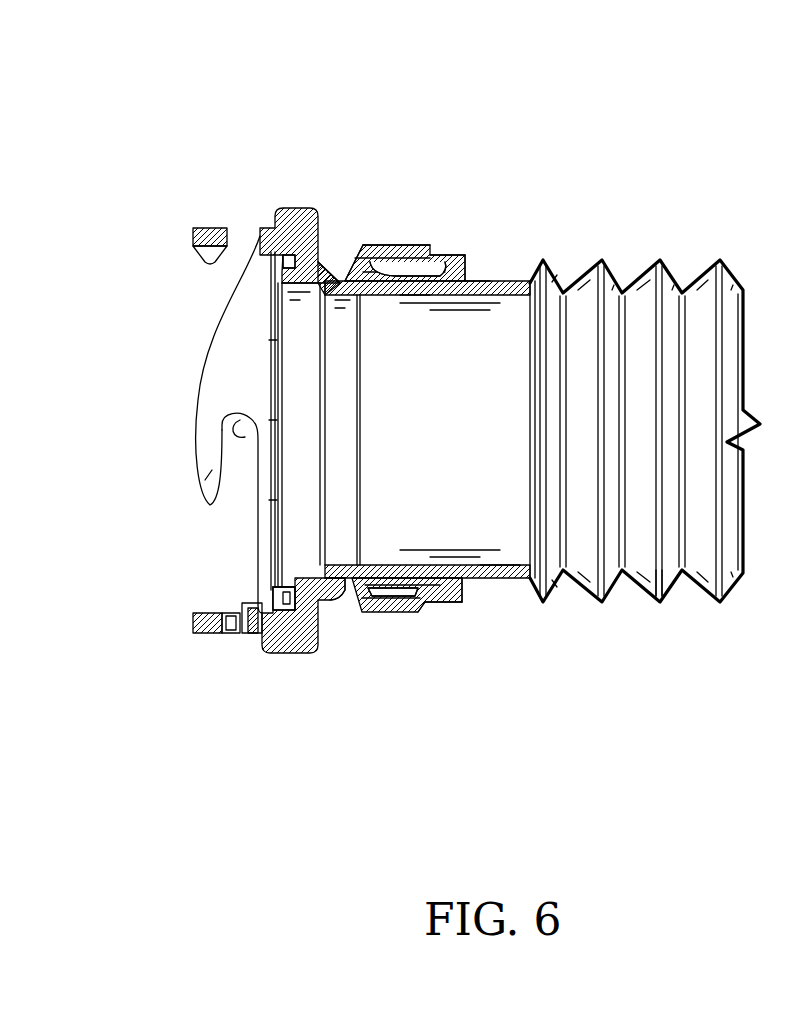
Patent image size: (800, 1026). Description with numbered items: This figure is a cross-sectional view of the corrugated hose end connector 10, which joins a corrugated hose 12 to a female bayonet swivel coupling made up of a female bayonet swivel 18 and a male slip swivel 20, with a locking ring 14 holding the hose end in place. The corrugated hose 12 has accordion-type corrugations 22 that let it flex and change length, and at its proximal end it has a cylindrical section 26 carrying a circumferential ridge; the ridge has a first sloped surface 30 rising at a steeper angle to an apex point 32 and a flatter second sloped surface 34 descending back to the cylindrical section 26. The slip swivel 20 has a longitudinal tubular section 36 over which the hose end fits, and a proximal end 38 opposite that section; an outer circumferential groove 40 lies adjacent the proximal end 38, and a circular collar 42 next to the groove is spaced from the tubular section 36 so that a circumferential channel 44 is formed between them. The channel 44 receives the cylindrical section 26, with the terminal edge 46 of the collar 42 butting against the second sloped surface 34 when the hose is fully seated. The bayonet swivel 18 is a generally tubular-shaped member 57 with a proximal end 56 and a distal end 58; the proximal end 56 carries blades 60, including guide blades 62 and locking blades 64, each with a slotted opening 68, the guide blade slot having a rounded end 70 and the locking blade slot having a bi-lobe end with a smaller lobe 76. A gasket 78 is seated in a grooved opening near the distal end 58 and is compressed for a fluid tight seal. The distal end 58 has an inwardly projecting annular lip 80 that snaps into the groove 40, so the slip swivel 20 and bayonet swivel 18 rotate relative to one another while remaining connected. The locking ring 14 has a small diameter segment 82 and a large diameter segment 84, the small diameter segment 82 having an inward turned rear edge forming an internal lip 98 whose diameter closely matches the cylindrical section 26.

The corrugated hose end connector 10 is at (559, 68).
The corrugated hose 12 is at (725, 240).
The locking ring 14 is at (395, 620).
The female bayonet swivel 18 is at (297, 653).
The male slip swivel 20 is at (335, 623).
The accordion-type corrugations 22 is at (660, 604).
The cylindrical section 26 is at (497, 618).
The first sloped surface 30 is at (493, 572).
The apex point 32 is at (445, 618).
The second sloped surface 34 is at (428, 618).
The longitudinal tubular section 36 is at (466, 444).
The proximal end of slip swivel 38 is at (310, 434).
The outer circumferential groove 40 is at (350, 281).
The circular collar 42 is at (382, 620).
The circumferential channel 44 is at (397, 255).
The terminal edge 46 is at (465, 262).
The proximal end of bayonet swivel 56 is at (262, 287).
The tubular-shaped member 57 is at (312, 376).
The distal end of bayonet swivel 58 is at (332, 272).
The blades 60 is at (222, 378).
The guide blades 62 is at (230, 352).
The locking blades 64 is at (208, 634).
The slotted opening 68 is at (230, 460).
The rounded end 70 is at (242, 437).
The smaller lobe 76 is at (255, 640).
The gasket 78 is at (280, 595).
The annular lip 80 is at (347, 279).
The small diameter segment 82 is at (447, 260).
The large diameter segment 84 is at (412, 247).
The internal lip 98 is at (478, 293).